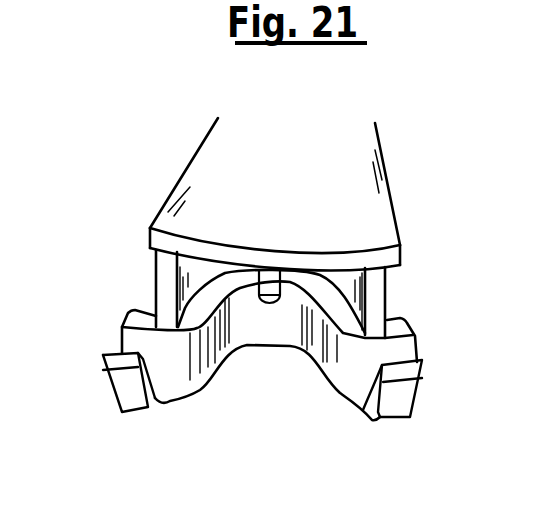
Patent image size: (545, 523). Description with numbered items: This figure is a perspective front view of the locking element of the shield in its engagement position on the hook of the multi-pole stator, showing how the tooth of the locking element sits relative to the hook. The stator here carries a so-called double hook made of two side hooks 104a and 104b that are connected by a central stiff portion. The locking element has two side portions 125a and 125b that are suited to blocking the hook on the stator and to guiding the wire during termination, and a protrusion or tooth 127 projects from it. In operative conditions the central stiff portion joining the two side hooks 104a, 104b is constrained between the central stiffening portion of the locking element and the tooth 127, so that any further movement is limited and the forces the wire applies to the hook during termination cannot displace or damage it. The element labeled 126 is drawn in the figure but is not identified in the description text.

The curved arm member 126 is at (222, 175).
The side portion 125a is at (170, 295).
The side portion 125b is at (378, 295).
The tooth 127 is at (270, 285).
The side hook 104a is at (108, 358).
The side hook 104b is at (392, 398).